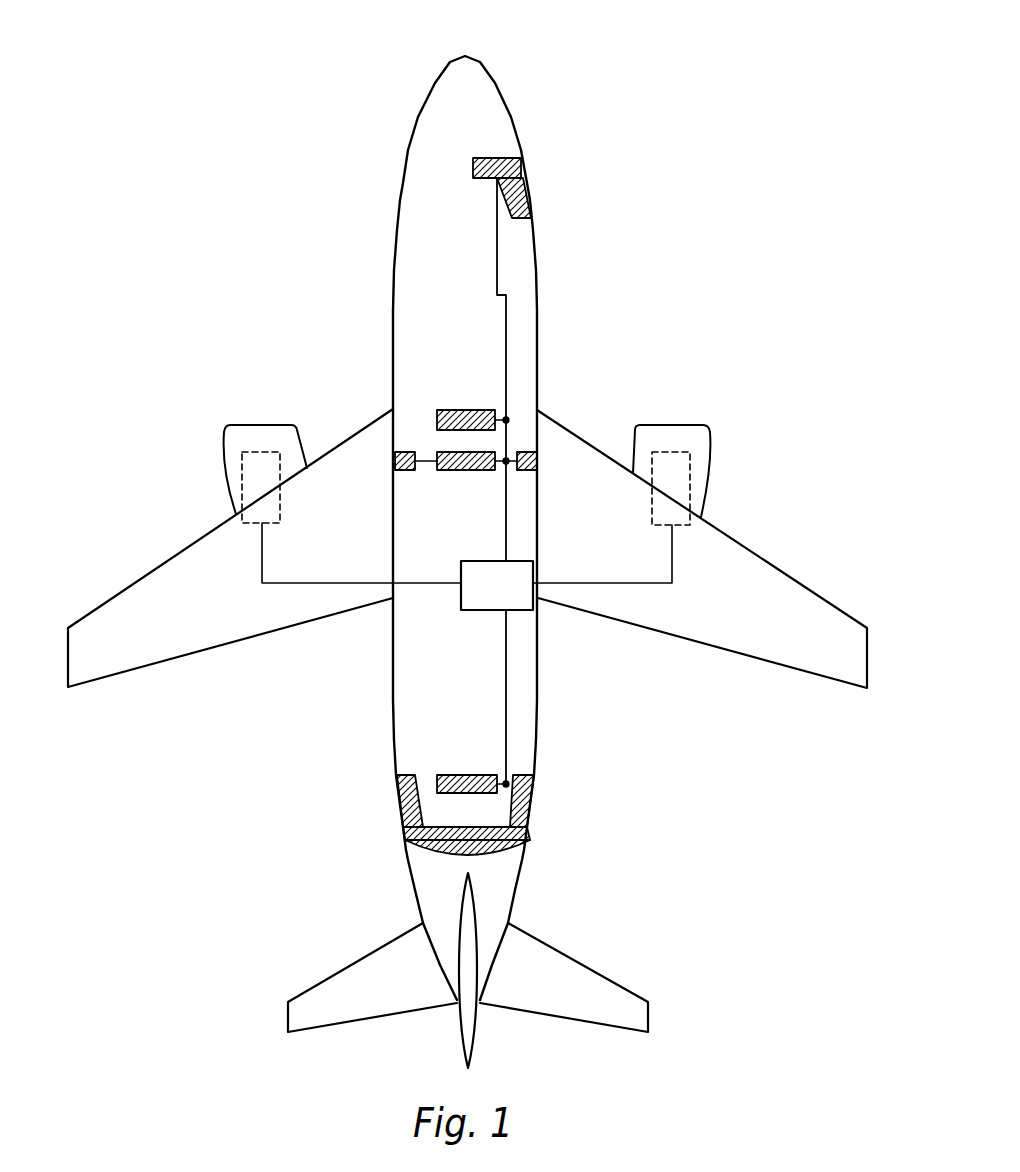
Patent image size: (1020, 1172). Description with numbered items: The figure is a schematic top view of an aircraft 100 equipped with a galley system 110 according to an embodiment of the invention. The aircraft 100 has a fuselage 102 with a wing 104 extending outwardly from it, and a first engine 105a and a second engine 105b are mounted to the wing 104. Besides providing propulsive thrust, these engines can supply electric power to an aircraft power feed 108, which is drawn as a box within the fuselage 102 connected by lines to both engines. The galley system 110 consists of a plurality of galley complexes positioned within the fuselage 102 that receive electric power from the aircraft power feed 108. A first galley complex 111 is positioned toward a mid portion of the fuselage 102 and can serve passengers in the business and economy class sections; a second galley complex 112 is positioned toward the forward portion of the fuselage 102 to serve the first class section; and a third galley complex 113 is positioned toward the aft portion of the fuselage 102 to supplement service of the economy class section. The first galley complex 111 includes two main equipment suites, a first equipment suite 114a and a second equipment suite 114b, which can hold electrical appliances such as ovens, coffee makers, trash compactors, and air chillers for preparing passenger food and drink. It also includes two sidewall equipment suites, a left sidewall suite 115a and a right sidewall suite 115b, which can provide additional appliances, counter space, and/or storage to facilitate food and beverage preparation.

The aircraft 100 is at (467, 551).
The fuselage 102 is at (500, 96).
The wing 104 is at (745, 542).
The first engine 105a is at (240, 465).
The second engine 105b is at (690, 465).
The aircraft power feed 108 is at (522, 611).
The galley system 110 is at (418, 763).
The first galley complex 111 is at (512, 438).
The second galley complex 112 is at (510, 233).
The third galley complex 113 is at (517, 767).
The first equipment suite 114a is at (462, 409).
The second equipment suite 114b is at (467, 471).
The left sidewall suite 115a is at (403, 471).
The right sidewall suite 115b is at (528, 471).